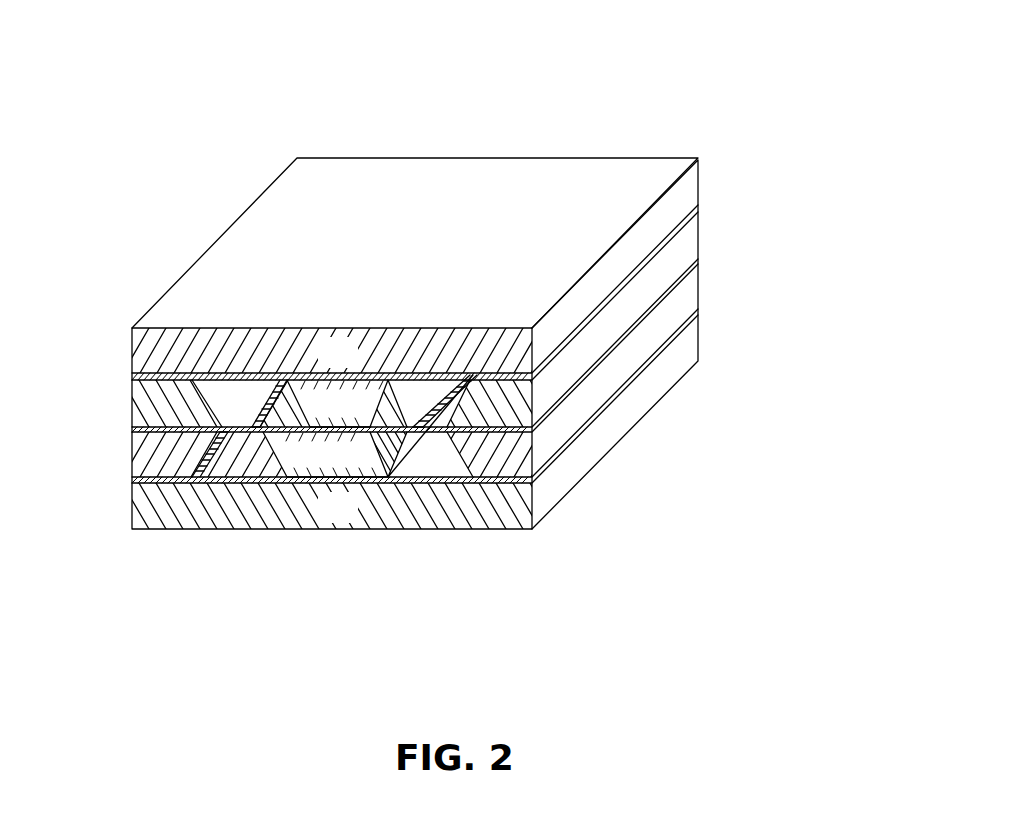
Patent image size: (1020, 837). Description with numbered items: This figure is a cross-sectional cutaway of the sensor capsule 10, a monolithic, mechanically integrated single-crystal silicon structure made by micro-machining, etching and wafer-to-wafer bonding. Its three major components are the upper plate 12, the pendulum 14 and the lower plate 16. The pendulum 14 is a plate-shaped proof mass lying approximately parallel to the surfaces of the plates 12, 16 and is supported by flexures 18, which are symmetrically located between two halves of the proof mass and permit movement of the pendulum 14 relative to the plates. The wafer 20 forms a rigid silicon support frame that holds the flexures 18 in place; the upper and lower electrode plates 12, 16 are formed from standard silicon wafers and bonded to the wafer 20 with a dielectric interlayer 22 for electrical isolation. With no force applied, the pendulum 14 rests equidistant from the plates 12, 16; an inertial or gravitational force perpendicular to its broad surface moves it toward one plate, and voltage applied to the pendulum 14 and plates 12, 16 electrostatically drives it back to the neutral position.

The sensor capsule 10 is at (481, 95).
The plate 12 is at (603, 160).
The pendulum 14 is at (283, 472).
The plate 16 is at (583, 482).
The flexures 18 is at (250, 415).
The wafer 20 is at (120, 376).
The dielectric interlayer 22 is at (132, 376).